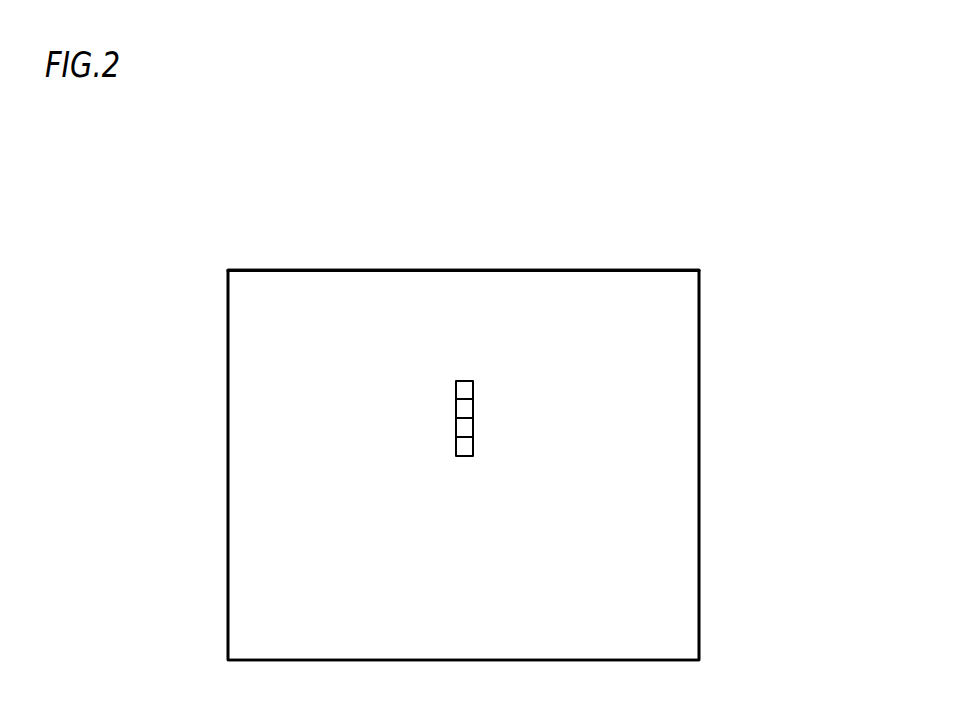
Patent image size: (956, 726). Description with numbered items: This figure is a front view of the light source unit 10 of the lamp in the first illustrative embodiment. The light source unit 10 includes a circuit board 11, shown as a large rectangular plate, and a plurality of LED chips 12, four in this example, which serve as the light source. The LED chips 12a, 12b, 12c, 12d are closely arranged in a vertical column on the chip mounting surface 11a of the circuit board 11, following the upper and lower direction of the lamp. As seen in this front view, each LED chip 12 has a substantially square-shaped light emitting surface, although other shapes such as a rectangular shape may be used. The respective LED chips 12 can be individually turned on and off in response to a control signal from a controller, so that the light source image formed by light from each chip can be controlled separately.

The light source unit 10 is at (525, 208).
The circuit board 11 is at (428, 270).
The chip mounting surface 11a is at (323, 312).
The LED chips 12 is at (783, 352).
The LED chip 12a is at (465, 389).
The LED chip 12b is at (465, 410).
The LED chip 12c is at (465, 433).
The LED chip 12d is at (465, 452).